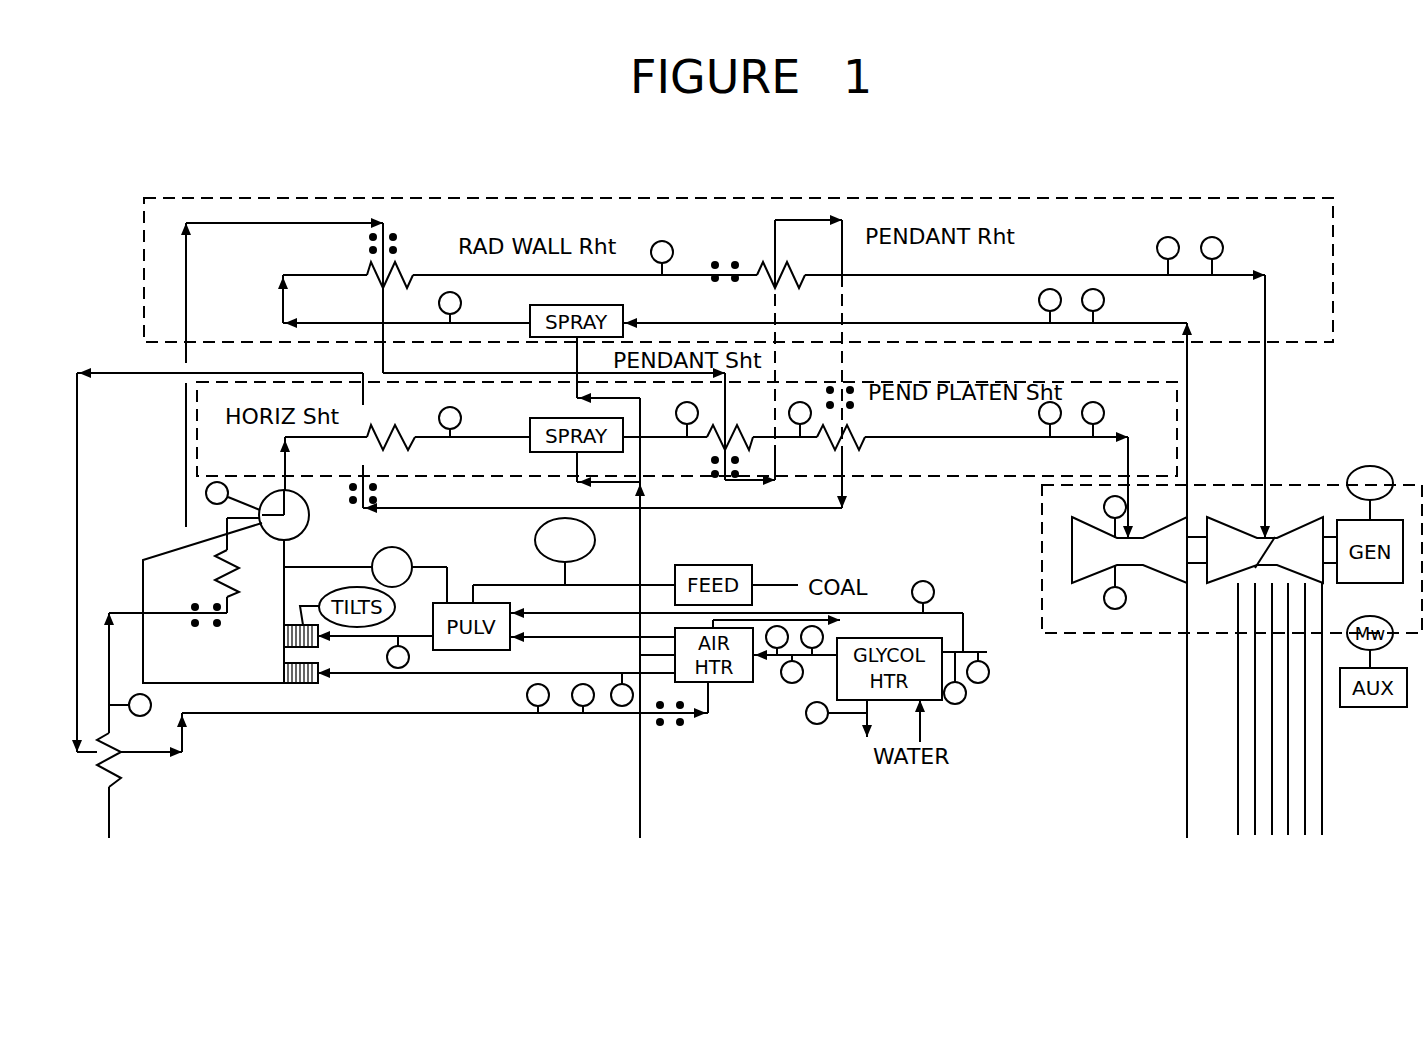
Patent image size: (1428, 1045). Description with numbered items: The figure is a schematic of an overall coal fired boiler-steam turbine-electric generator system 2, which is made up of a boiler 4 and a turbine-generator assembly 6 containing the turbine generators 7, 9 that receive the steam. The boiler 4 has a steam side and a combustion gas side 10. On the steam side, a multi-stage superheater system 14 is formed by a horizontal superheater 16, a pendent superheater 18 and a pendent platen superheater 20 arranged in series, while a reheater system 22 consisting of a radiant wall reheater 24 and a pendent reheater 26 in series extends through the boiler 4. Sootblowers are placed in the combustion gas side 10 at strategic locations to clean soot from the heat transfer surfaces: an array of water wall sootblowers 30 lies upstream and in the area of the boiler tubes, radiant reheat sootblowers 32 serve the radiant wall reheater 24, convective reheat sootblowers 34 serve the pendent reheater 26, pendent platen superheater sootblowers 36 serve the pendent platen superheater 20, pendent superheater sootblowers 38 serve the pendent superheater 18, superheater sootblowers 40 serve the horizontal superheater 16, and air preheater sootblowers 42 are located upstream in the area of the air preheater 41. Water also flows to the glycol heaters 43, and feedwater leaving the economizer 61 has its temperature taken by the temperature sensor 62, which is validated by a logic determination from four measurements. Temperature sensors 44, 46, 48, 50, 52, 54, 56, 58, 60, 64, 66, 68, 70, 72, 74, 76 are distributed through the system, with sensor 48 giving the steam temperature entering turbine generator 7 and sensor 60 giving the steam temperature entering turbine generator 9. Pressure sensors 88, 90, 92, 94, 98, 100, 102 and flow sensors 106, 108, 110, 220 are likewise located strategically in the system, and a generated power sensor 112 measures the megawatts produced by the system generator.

The coal fired boiler-steam turbine-electric generator system 2 is at (135, 231).
The boiler 4 is at (178, 670).
The turbine-generator assembly 6 is at (1300, 481).
The turbine generator 7 is at (1292, 526).
The turbine generator 9 is at (1173, 520).
The combustion gas side 10 is at (757, 509).
The multi-stage superheater system 14 is at (1180, 410).
The horizontal superheater 16 is at (368, 424).
The pendent superheater 18 is at (742, 426).
The pendent platen superheater 20 is at (863, 440).
The reheater system 22 is at (1105, 197).
The radiant wall reheater 24 is at (405, 272).
The pendent reheater 26 is at (795, 268).
The water wall sootblowers 30 is at (197, 600).
The radiant reheat sootblowers 32 is at (397, 235).
The convective reheat sootblowers 34 is at (738, 259).
The pendent platen superheater sootblowers 36 is at (853, 387).
The pendent superheater sootblowers 38 is at (714, 476).
The superheater sootblowers 40 is at (378, 490).
The air preheater 41 is at (640, 656).
The air preheater sootblowers 42 is at (684, 726).
The glycol heaters 43 is at (943, 645).
The temperature sensor 44 is at (461, 300).
The temperature sensor 46 is at (671, 246).
The temperature sensor 48 is at (1175, 239).
The temperature sensor 50 is at (1104, 507).
The temperature sensor 52 is at (461, 415).
The temperature sensor 54 is at (677, 424).
The temperature sensor 56 is at (803, 401).
The temperature sensor 58 is at (1038, 299).
The temperature sensor 60 is at (1043, 423).
The economizer 61 is at (100, 750).
The temperature sensor 62 is at (152, 705).
The temperature sensor 64 is at (387, 681).
The temperature sensor 66 is at (575, 706).
The temperature sensor 68 is at (612, 706).
The temperature sensor 70 is at (785, 683).
The temperature sensor 72 is at (816, 660).
The temperature sensor 74 is at (990, 675).
The temperature sensor 76 is at (812, 725).
The pressure sensor 88 is at (1105, 299).
The pressure sensor 90 is at (1224, 246).
The pressure sensor 92 is at (1089, 423).
The pressure sensor 94 is at (1126, 604).
The pressure sensor 98 is at (526, 698).
The pressure sensor 100 is at (206, 490).
The pressure sensor 102 is at (781, 626).
The flow sensor 106 is at (966, 699).
The flow sensor 108 is at (413, 554).
The flow sensor 110 is at (596, 540).
The generated power sensor 112 is at (1380, 464).
The flow sensor 220 is at (934, 586).